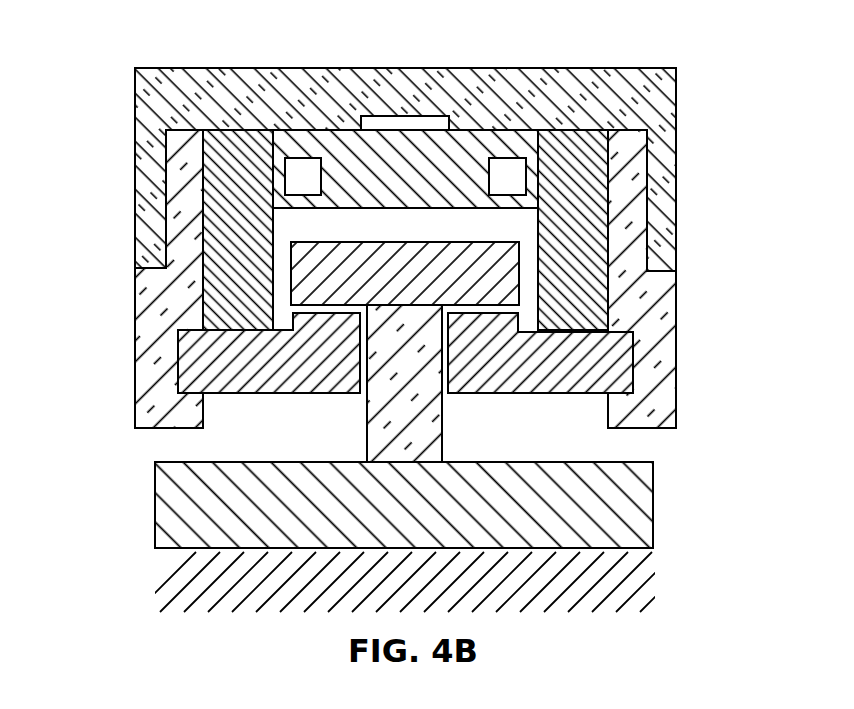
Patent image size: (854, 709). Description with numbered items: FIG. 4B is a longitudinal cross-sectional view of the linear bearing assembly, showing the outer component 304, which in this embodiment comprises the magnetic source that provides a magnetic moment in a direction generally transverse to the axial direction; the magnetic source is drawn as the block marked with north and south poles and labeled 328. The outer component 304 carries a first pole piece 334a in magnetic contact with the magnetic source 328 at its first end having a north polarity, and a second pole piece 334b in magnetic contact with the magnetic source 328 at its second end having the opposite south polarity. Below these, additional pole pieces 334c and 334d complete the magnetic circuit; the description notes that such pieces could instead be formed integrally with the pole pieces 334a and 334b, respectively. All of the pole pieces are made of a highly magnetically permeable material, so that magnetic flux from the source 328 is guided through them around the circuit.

The outer component 304 is at (383, 117).
The permanent magnet 328 is at (418, 170).
The first pole piece 334a is at (215, 207).
The second pole piece 334b is at (583, 212).
The additional pole piece 334c is at (227, 367).
The additional pole piece 334d is at (583, 371).